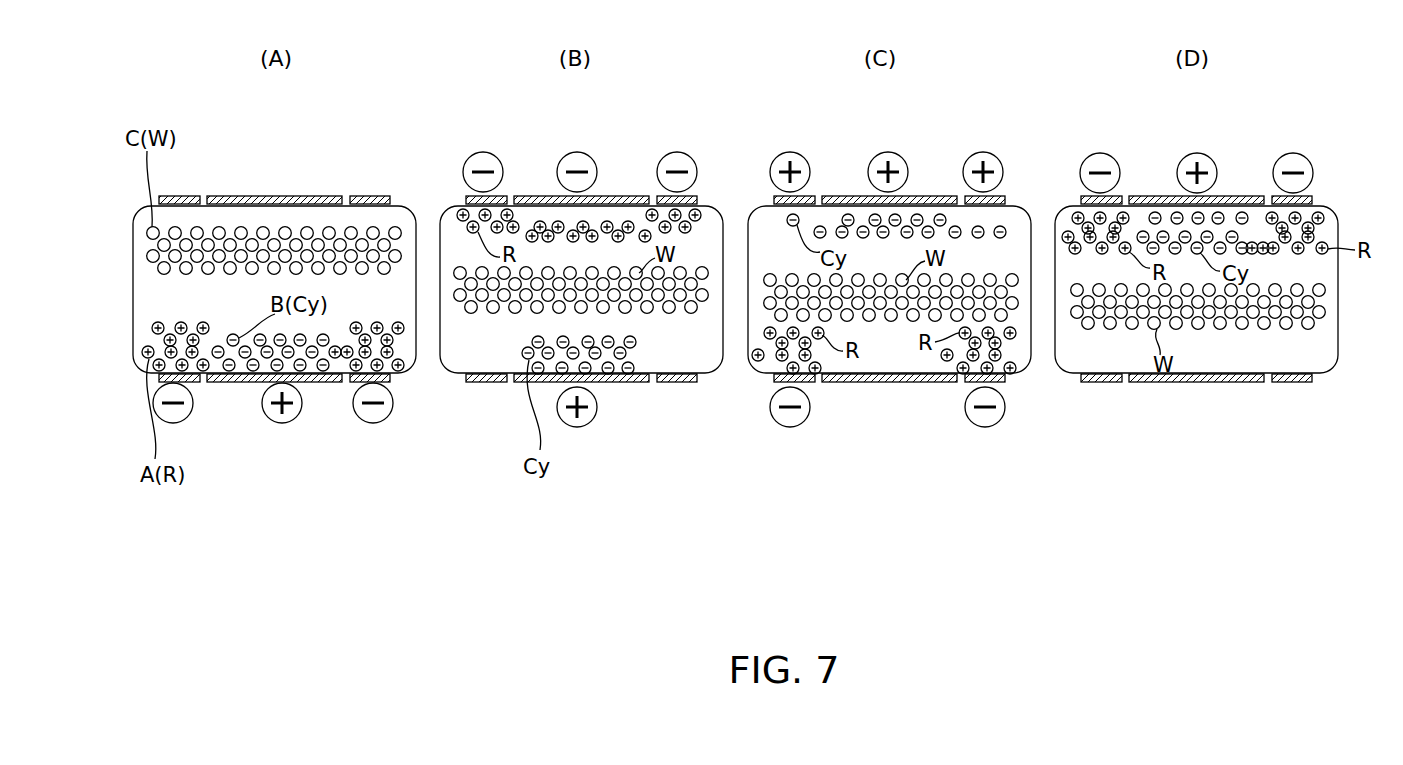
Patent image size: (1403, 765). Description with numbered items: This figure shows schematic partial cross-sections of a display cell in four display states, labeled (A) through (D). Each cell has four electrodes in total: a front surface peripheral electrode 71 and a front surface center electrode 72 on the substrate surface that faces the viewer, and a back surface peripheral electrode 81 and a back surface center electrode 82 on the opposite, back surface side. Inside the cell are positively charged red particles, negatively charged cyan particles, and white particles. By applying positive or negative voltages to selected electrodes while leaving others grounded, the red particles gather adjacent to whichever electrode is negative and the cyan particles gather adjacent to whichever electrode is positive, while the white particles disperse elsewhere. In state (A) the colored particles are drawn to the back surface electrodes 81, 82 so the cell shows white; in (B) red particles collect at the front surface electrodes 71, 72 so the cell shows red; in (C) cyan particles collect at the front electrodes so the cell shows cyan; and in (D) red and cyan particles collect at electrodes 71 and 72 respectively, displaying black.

The front surface peripheral electrode 71 is at (190, 196).
The front surface center electrode 72 is at (300, 196).
The back surface peripheral electrode 81 is at (197, 382).
The back surface center electrode 82 is at (313, 382).